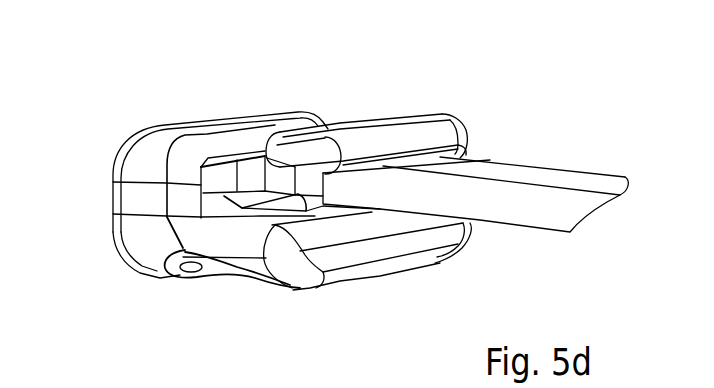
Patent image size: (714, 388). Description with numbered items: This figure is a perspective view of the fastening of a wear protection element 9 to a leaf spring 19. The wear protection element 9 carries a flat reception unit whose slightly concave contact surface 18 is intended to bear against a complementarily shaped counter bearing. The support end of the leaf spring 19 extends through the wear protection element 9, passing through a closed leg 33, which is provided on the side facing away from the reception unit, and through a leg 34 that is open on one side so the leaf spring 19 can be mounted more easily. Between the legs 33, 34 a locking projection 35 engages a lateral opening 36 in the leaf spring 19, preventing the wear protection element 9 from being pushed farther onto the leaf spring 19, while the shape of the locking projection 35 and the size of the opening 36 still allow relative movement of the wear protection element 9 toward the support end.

The wear protection element 9 is at (136, 238).
The contact surface 18 is at (205, 272).
The leaf spring 19 is at (557, 208).
The closed leg 33 is at (223, 150).
The leg open on one side 34 is at (387, 143).
The locking projection 35 is at (283, 197).
The lateral opening 36 is at (250, 178).